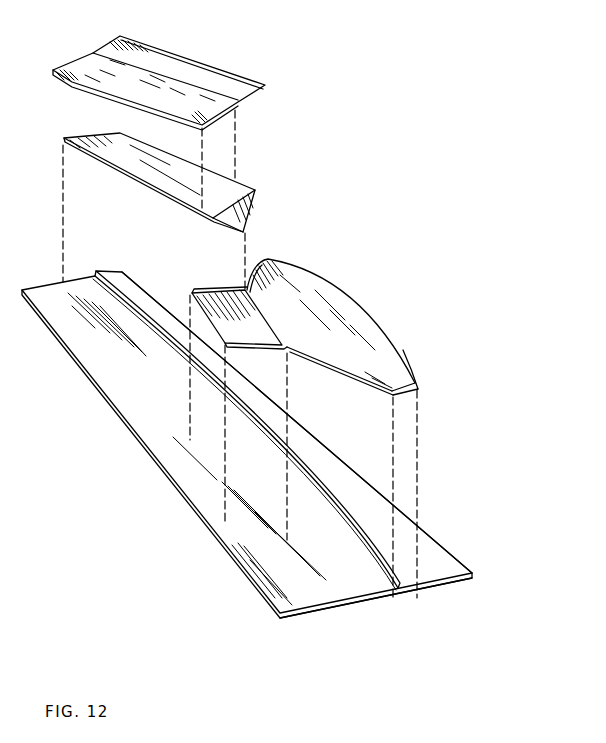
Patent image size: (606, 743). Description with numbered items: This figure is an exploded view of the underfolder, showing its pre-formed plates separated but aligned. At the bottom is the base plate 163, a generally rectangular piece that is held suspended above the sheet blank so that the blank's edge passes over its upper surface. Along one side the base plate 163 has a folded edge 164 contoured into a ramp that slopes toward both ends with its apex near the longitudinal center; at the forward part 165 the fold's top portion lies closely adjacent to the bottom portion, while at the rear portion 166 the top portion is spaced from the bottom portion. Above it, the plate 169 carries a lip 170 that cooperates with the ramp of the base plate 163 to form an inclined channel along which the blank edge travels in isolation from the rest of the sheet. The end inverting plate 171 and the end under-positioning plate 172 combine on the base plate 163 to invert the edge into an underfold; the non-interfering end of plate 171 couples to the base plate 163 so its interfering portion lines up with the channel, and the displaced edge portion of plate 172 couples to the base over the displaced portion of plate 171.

The base plate 163 is at (162, 470).
The folded edge 164 is at (447, 550).
The forward part of the base plate 165 is at (472, 577).
The rear portion of the base plate 166 is at (112, 272).
The plate 169 is at (407, 356).
The lip 170 is at (215, 291).
The end inverting plate 171 is at (257, 193).
The end under-positioning plate 172 is at (253, 80).